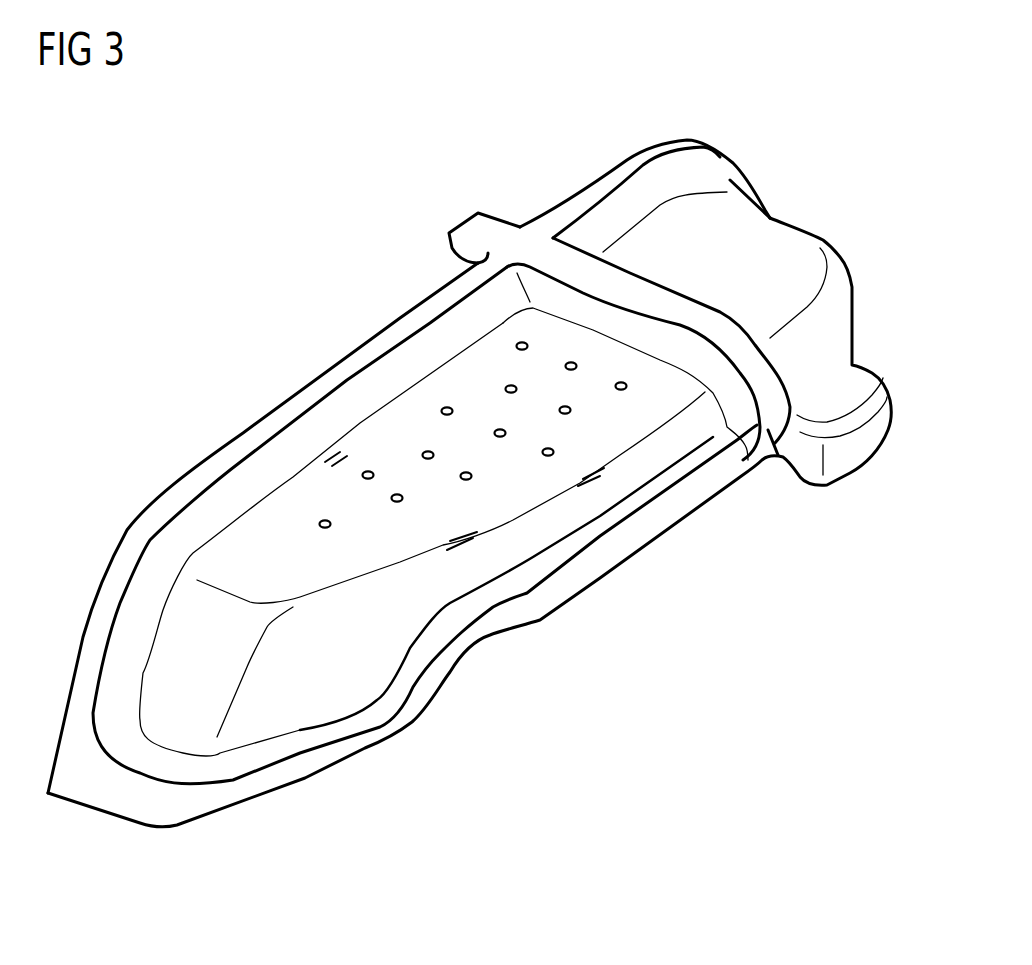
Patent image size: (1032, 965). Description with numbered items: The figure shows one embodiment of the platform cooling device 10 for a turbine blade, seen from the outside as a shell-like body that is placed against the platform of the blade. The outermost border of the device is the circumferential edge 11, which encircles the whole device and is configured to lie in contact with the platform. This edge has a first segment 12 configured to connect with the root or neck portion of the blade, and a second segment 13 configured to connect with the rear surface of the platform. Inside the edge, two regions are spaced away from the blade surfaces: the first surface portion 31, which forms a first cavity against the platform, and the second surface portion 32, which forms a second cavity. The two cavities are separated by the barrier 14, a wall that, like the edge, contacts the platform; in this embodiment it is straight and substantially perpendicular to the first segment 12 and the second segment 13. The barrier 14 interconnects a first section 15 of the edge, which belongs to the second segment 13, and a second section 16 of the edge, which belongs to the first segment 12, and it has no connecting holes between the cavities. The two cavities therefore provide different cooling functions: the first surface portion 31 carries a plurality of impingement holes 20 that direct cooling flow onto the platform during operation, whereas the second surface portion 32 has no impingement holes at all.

The platform cooling device 10 is at (736, 100).
The circumferential edge 11 is at (717, 158).
The first segment 12 is at (697, 493).
The second segment 13 is at (397, 318).
The barrier 14 is at (673, 307).
The first section 15 is at (520, 240).
The second section 16 is at (773, 440).
The impingement holes 20 is at (452, 408).
The first surface portion 31 is at (380, 437).
The second surface portion 32 is at (775, 250).